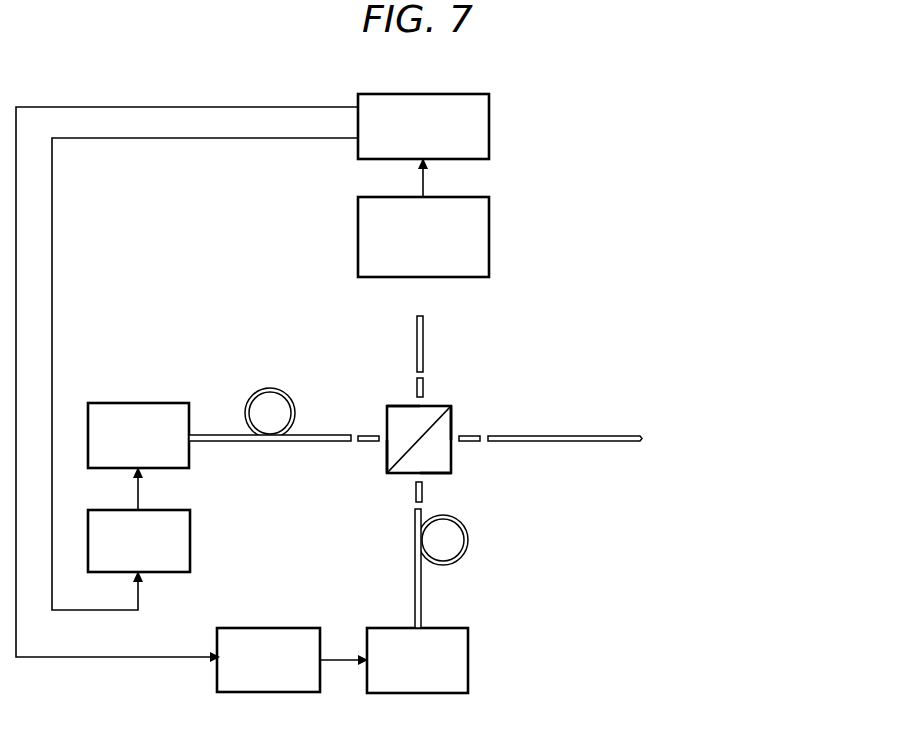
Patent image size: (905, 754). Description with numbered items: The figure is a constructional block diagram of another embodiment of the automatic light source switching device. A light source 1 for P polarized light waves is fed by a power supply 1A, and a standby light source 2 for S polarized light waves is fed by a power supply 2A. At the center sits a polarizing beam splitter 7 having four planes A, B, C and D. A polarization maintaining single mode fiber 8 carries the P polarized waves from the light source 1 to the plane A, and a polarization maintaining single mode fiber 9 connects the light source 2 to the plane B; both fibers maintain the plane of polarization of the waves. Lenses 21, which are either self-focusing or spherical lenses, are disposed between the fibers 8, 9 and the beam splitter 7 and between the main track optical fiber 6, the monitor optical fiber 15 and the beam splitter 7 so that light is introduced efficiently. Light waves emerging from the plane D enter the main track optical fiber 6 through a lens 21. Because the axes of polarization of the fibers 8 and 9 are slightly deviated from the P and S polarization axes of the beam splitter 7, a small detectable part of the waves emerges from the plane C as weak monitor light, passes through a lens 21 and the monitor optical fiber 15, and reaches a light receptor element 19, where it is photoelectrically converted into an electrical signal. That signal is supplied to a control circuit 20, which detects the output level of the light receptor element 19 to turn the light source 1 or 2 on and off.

The light source 1 is at (170, 403).
The power supply 1A is at (191, 522).
The light source 2 is at (470, 644).
The power supply 2A is at (299, 628).
The main track optical fiber 6 is at (598, 436).
The polarizing beam splitter 7 is at (447, 406).
The polarization maintaining single mode fiber 8 is at (290, 398).
The polarization maintaining single mode fiber 9 is at (470, 525).
The monitor optical fiber 15 is at (416, 333).
The light receptor element 19 is at (490, 219).
The control circuit 20 is at (490, 112).
The lens 21 is at (415, 388).
The plane A is at (385, 458).
The plane B is at (437, 473).
The plane C is at (400, 406).
The plane D is at (455, 418).